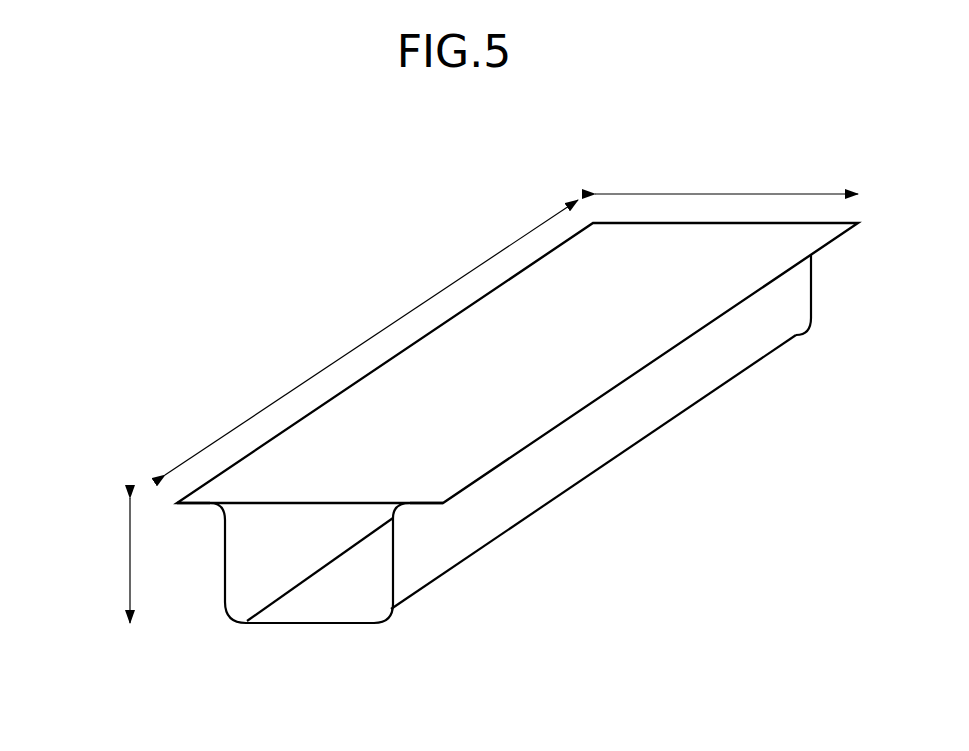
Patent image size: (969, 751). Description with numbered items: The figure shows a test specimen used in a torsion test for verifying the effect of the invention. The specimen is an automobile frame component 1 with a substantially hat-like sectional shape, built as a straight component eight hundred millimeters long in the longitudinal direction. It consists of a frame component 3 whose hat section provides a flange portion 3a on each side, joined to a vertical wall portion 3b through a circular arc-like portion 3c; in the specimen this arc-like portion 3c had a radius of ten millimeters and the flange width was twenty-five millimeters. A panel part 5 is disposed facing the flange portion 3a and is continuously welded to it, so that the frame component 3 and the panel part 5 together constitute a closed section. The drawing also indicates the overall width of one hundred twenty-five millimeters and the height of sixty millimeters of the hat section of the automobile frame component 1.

The automobile frame component 1 is at (462, 204).
The frame component 3 is at (300, 627).
The flange portion 3a is at (190, 507).
The vertical wall portion 3b is at (225, 580).
The circular arc-like portion 3c is at (222, 511).
The panel part 5 is at (525, 392).